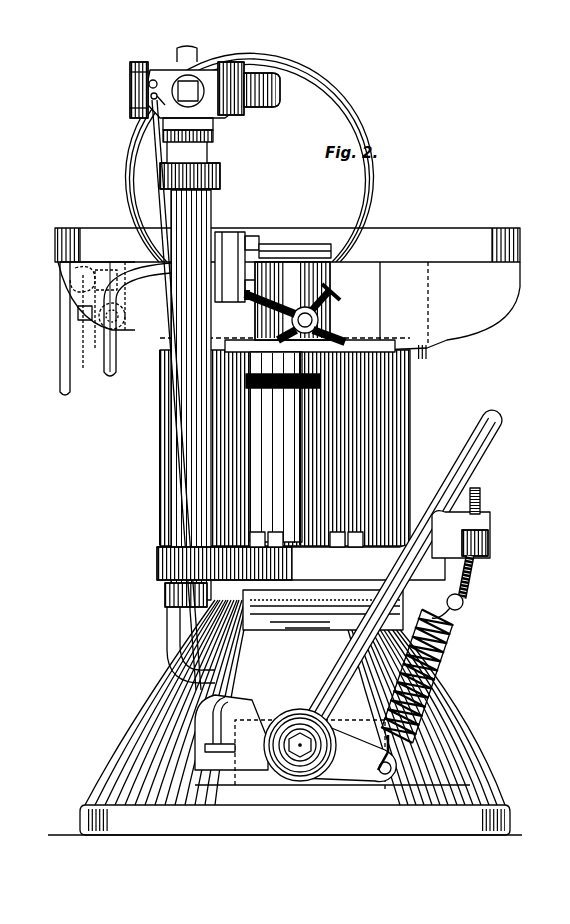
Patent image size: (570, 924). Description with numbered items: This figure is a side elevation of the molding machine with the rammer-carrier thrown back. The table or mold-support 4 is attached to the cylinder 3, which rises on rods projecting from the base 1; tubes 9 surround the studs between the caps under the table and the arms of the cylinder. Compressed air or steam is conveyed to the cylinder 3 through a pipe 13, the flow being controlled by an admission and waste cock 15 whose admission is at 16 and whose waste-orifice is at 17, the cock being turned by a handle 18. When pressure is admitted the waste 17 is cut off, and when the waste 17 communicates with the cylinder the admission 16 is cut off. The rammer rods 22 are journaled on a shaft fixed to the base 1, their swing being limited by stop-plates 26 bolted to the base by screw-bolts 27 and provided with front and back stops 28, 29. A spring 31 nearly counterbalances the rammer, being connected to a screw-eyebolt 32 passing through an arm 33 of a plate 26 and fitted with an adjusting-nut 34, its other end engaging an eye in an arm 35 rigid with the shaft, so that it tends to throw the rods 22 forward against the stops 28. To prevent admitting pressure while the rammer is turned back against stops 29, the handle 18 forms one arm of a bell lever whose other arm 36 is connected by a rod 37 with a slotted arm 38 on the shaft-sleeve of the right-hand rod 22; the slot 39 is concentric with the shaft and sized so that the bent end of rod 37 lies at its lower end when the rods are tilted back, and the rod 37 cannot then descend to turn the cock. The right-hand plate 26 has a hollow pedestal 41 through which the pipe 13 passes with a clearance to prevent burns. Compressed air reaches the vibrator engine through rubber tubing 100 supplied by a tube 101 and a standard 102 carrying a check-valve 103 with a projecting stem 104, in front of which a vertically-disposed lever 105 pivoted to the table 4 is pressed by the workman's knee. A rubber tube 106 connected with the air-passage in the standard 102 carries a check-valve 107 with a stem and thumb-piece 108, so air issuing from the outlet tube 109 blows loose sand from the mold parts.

The base 1 is at (188, 700).
The cylinder 3 is at (410, 414).
The table or mold-support 4 is at (438, 240).
The tubes 9 is at (283, 448).
The pipe 13 is at (205, 195).
The admission and waste cock 15 is at (215, 112).
The admission 16 is at (282, 90).
The waste-orifice 17 is at (130, 90).
The handle 18 is at (200, 55).
The rods 22 is at (495, 425).
The stop-plates 26 is at (368, 556).
The screw-bolts 27 is at (258, 532).
The front stops 28 is at (280, 563).
The back stops 29 is at (450, 525).
The spring 31 is at (445, 680).
The screw-eyebolt 32 is at (475, 580).
The arm 33 is at (490, 542).
The adjusting-nut 34 is at (485, 520).
The arm 35 is at (368, 790).
The arm of bell lever 36 is at (165, 78).
The rod 37 is at (152, 146).
The slotted arm 38 is at (225, 755).
The slot 39 is at (205, 733).
The hollow pedestal 41 is at (160, 491).
The rubber tubing 100 is at (130, 250).
The tube 101 is at (290, 243).
The standard 102 is at (240, 232).
The check-valve 103 is at (83, 340).
The projecting stem 104 is at (78, 314).
The lever 105 is at (60, 353).
The rubber tube 106 is at (135, 412).
The check-valve 107 is at (320, 320).
The stem and thumb-piece 108 is at (330, 290).
The tube 109 is at (355, 337).